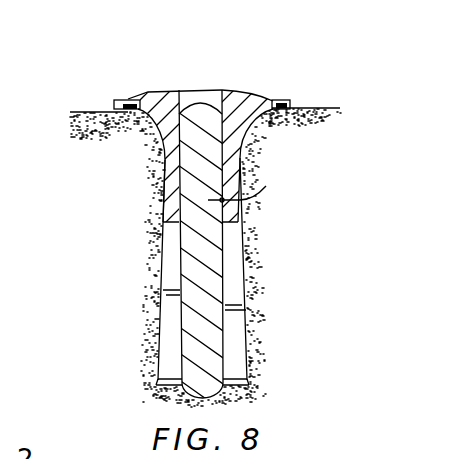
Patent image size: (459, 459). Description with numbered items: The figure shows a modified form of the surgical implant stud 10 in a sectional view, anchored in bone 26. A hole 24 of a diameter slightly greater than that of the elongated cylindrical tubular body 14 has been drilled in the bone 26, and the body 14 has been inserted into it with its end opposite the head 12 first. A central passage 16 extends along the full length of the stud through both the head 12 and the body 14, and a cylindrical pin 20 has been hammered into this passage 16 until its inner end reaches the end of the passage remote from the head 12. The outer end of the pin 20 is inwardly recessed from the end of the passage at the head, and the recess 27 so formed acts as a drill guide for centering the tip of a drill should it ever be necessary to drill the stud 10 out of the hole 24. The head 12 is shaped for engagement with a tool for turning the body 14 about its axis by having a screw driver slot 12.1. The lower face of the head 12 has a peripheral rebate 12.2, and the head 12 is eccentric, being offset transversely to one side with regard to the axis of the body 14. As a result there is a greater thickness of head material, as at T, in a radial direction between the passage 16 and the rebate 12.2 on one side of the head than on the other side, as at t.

The stud 10 is at (285, 52).
The head 12 is at (135, 88).
The screw driver slot 12.1 is at (262, 52).
The peripheral rebate 12.2 is at (116, 106).
The body 14 is at (160, 162).
The central passage 16 is at (207, 92).
The pin 20 is at (248, 180).
The hole 24 is at (155, 199).
The bone 26 is at (321, 103).
The recess 27 is at (188, 92).
The lesser head thickness t is at (150, 125).
The greater head thickness T is at (262, 112).